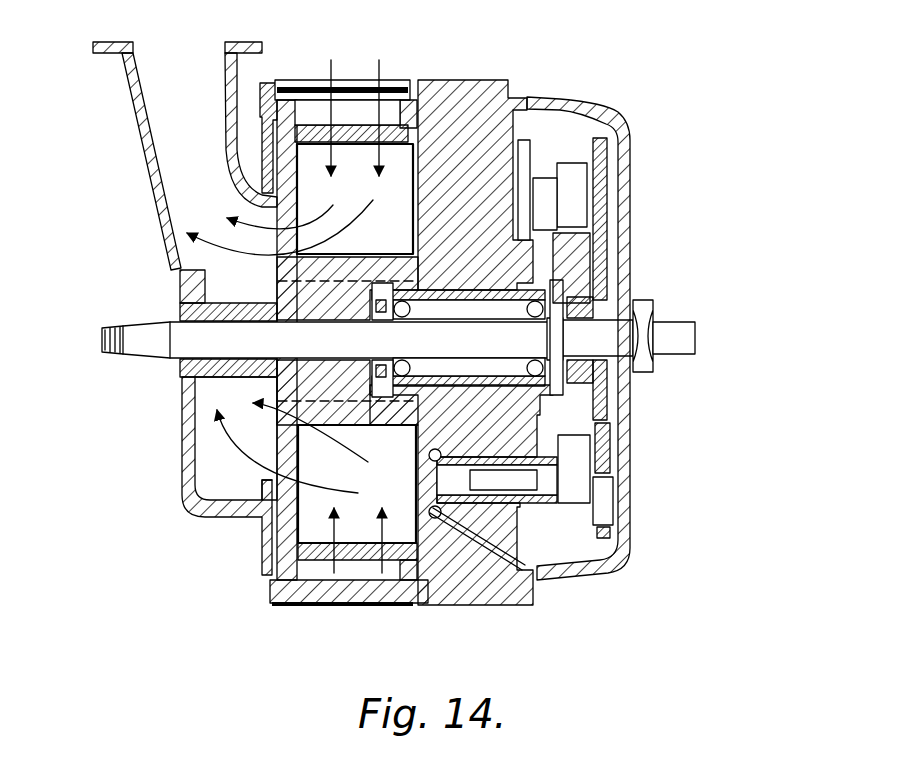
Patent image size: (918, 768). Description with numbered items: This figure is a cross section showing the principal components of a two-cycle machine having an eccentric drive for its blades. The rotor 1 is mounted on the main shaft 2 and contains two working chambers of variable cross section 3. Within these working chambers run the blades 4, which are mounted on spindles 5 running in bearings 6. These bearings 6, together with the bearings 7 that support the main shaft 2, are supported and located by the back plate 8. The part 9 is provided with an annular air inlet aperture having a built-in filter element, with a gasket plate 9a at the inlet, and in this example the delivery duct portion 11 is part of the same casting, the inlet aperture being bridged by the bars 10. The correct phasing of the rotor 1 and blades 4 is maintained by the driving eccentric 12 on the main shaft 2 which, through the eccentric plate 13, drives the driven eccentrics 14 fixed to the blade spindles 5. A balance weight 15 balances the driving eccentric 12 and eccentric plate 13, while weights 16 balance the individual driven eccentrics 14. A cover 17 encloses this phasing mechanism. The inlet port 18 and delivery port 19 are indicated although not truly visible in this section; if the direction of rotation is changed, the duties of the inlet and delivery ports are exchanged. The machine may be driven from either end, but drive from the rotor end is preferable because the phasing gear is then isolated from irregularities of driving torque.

The rotor 1 is at (282, 200).
The main shaft 2 is at (192, 344).
The working chambers of variable cross section 3 is at (298, 508).
The blades 4 is at (392, 522).
The spindles 5 is at (523, 478).
The bearings 6 is at (530, 565).
The bearings 7 is at (492, 302).
The back plate 8 is at (473, 94).
The part with annular air inlet aperture 9 is at (268, 88).
The gasket plate 9a is at (393, 86).
The bars 10 is at (334, 598).
The delivery duct portion 11 is at (178, 163).
The driving eccentric 12 is at (608, 406).
The eccentric plate 13 is at (600, 444).
The driven eccentrics 14 is at (610, 493).
The balance weight 15 is at (580, 265).
The weights 16 is at (575, 182).
The cover 17 is at (585, 108).
The inlet port 18 is at (348, 132).
The delivery port 19 is at (292, 238).